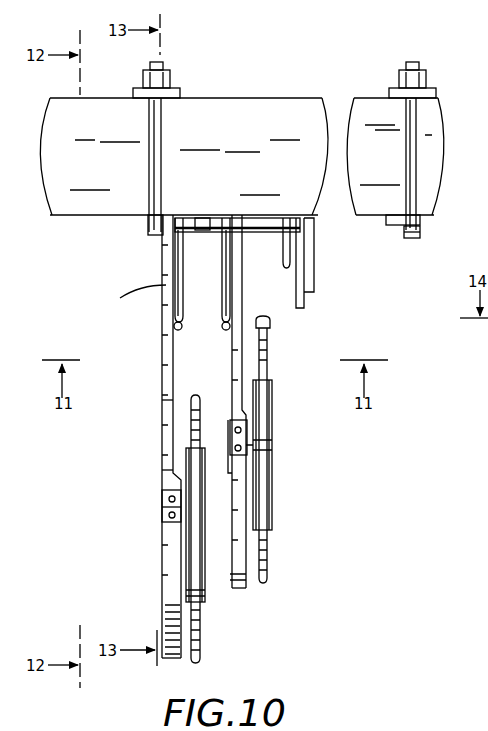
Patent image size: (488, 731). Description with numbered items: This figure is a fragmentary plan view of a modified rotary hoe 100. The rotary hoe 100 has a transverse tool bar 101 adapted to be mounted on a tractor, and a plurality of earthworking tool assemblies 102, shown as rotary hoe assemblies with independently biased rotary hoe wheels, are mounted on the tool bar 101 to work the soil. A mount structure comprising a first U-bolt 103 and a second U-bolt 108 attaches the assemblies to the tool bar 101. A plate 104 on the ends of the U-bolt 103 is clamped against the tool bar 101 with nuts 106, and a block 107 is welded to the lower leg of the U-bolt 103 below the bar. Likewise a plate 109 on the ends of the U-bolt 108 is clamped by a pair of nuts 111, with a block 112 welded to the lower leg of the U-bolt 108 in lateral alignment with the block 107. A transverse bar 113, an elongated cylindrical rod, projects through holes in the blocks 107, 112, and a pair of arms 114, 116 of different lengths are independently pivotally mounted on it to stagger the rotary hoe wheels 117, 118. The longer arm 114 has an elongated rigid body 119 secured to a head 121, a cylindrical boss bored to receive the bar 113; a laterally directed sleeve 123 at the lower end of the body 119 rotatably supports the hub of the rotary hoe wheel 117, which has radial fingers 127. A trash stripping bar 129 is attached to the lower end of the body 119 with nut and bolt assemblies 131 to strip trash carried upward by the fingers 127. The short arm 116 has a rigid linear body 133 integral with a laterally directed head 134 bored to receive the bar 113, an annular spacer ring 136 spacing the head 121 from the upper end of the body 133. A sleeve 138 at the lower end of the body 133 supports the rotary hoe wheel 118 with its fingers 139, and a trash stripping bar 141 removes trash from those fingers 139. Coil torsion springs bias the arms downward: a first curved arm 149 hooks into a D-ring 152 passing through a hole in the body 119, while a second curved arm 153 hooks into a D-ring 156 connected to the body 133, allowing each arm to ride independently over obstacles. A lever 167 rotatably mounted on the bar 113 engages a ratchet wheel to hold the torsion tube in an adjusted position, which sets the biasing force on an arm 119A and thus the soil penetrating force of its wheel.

The rotary hoe 100 is at (266, 58).
The transverse tool bar 101 is at (283, 118).
The earthworking tool assemblies 102 is at (122, 482).
The first U-bolt 103 is at (158, 145).
The plate 104 is at (180, 96).
The nuts 106 is at (170, 85).
The block 107 is at (148, 236).
The second U-bolt 108 is at (414, 160).
The plate 109 is at (437, 95).
The nuts 111 is at (420, 80).
The block 112 is at (412, 238).
The transverse bar 113 is at (392, 226).
The arm 114 is at (158, 414).
The arm 116 is at (252, 303).
The rotary hoe wheel 117 is at (206, 638).
The rotary hoe wheel 118 is at (275, 548).
The body 119 is at (165, 372).
The arm 119A is at (300, 300).
The head 121 is at (200, 230).
The sleeve 123 is at (190, 535).
The fingers 127 is at (202, 620).
The trash stripping bar 129 is at (175, 604).
The nut and bolt assemblies 131 is at (170, 516).
The body 133 is at (234, 376).
The head 134 is at (265, 235).
The annular spacer ring 136 is at (204, 222).
The sleeve 138 is at (255, 447).
The fingers 139 is at (268, 365).
The trash stripping bar 141 is at (246, 588).
The first curved arm 149 is at (141, 299).
The D-ring 152 is at (166, 326).
The second curved arm 153 is at (226, 282).
The D-ring 156 is at (220, 326).
The lever 167 is at (280, 224).